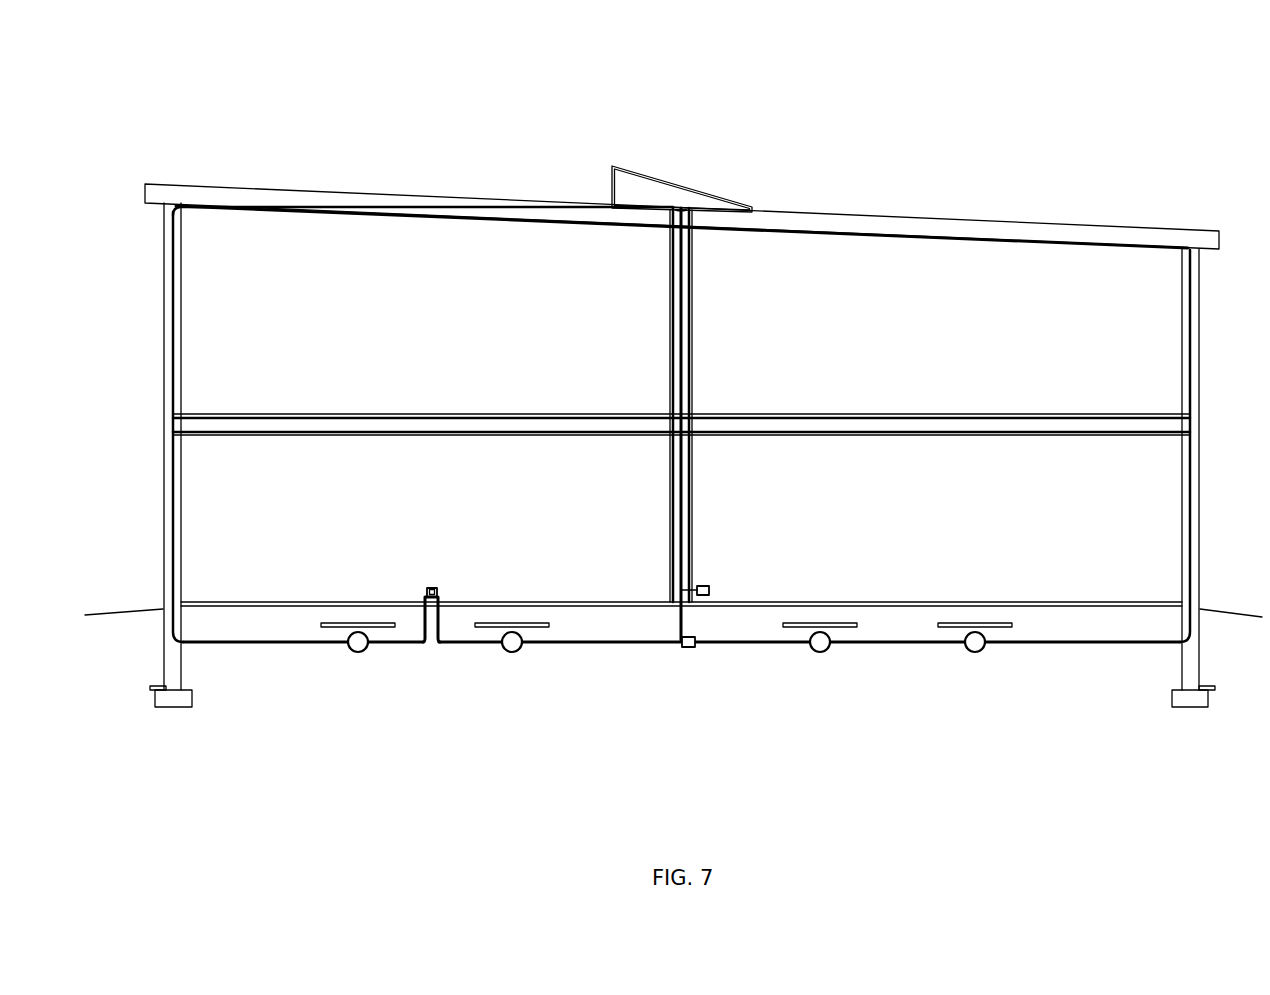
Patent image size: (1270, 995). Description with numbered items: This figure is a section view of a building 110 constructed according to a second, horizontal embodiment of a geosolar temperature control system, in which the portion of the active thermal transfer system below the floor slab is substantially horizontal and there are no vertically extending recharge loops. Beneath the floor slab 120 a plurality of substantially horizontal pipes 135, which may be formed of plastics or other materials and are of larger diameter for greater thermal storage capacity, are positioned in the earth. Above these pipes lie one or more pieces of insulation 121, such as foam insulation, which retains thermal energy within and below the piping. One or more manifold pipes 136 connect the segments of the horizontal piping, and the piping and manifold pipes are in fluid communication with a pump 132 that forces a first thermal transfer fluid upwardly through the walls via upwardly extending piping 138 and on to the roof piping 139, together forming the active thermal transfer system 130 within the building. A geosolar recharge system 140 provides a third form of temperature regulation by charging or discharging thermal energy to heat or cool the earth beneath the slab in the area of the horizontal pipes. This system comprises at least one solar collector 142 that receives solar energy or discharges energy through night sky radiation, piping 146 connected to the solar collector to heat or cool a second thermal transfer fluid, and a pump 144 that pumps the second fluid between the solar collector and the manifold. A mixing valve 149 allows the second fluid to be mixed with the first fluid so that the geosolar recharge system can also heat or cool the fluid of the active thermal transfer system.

The building 110 is at (1063, 125).
The floor slab 120 is at (1150, 596).
The insulation 121 is at (346, 623).
The active thermal transfer system 130 is at (433, 668).
The pump 132 is at (432, 588).
The horizontal pipes 135 is at (361, 652).
The manifold pipes 136 is at (743, 645).
The upwardly extending piping 138 is at (173, 555).
The roof piping 139 is at (920, 244).
The geosolar recharge system 140 is at (720, 165).
The solar collector 142 is at (668, 182).
The pump 144 is at (709, 590).
The piping 146 is at (680, 526).
The mixing valve 149 is at (686, 648).